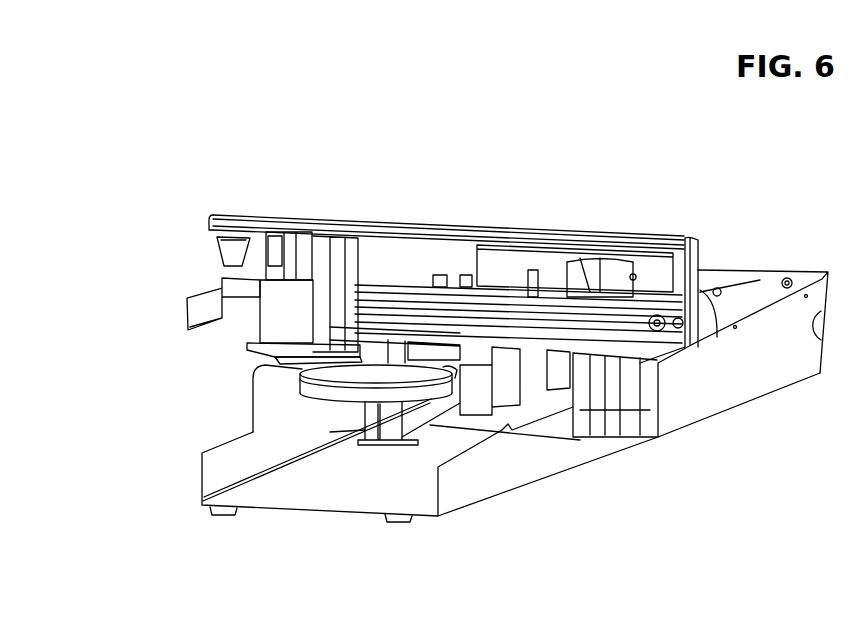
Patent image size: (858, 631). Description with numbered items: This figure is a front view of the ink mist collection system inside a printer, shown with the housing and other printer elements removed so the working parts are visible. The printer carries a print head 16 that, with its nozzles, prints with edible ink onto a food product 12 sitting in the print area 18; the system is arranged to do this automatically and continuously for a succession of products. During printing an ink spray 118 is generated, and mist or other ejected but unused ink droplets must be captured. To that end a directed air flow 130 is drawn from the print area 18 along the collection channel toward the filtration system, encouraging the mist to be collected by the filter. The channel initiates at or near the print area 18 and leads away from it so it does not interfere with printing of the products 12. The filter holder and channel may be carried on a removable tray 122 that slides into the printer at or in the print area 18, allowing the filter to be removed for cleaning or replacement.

The print head 16 is at (272, 310).
The ink spray 118 is at (282, 363).
The food product 12 is at (300, 380).
The directed air flow 130 is at (309, 429).
The removable tray 122 is at (295, 512).
The print area 18 is at (477, 380).